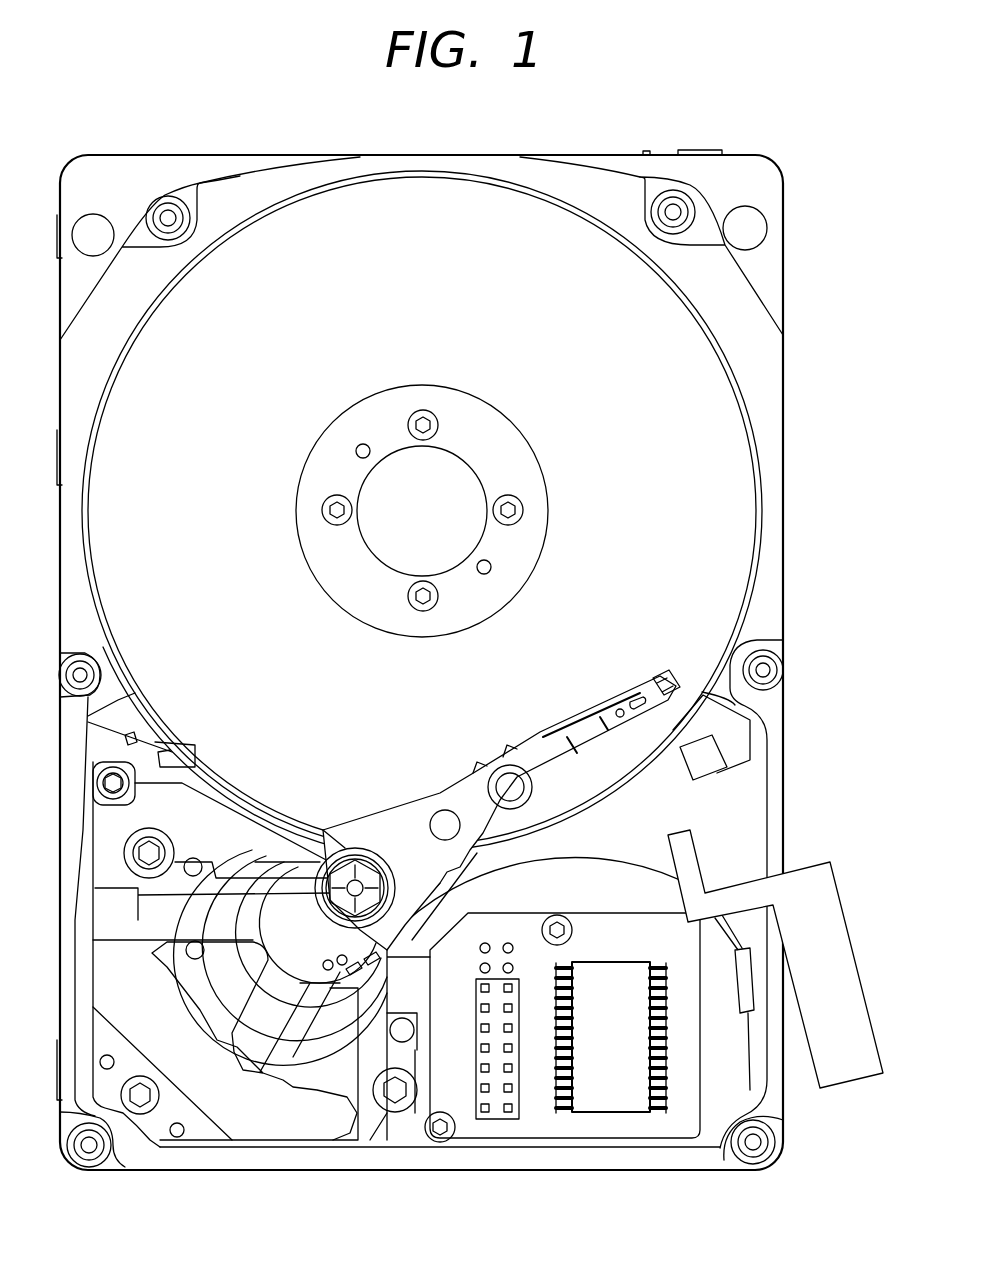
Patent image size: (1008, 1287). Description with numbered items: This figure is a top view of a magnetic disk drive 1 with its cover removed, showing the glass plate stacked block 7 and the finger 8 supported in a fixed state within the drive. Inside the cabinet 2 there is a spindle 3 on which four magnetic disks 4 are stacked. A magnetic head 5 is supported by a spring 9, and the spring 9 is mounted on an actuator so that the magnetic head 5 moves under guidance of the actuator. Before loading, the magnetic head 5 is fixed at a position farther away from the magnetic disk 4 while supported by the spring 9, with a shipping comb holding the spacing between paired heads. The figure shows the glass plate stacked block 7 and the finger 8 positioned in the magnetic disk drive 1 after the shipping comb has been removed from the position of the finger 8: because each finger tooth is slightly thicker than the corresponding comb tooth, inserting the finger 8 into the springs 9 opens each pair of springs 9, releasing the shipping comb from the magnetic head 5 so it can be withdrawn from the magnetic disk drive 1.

The magnetic disk drive 1 is at (693, 118).
The cabinet 2 is at (777, 727).
The spindle 3 is at (472, 528).
The magnetic disk 4 is at (705, 390).
The magnetic head 5 is at (667, 680).
The glass plate stacked block 7 is at (740, 752).
The finger 8 is at (848, 1067).
The spring 9 is at (597, 717).